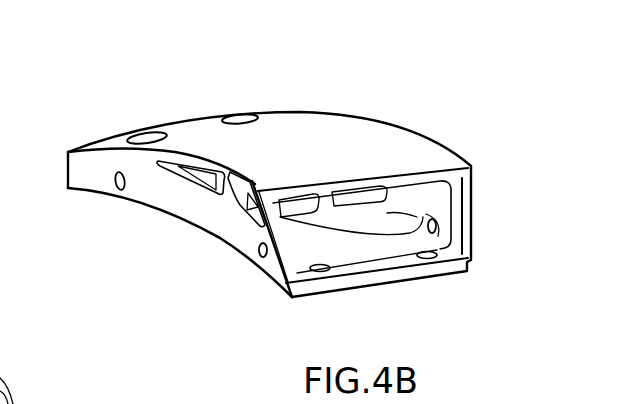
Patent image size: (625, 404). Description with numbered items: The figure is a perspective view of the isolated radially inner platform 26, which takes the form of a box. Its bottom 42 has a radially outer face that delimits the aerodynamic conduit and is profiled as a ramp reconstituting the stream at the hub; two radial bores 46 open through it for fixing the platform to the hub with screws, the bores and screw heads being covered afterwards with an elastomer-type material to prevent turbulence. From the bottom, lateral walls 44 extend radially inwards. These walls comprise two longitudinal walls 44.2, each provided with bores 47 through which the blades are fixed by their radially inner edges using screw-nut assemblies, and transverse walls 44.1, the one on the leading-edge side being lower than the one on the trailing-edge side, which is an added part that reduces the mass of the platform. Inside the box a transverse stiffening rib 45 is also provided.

The radially inner platform 26 is at (388, 97).
The bottom 42 is at (365, 181).
The lateral walls 44 is at (190, 232).
The transverse wall 44.1 is at (101, 141).
The longitudinal wall 44.2 is at (163, 193).
The transverse stiffening rib 45 is at (318, 220).
The radial bore 46 is at (241, 117).
The bore 47 is at (261, 262).